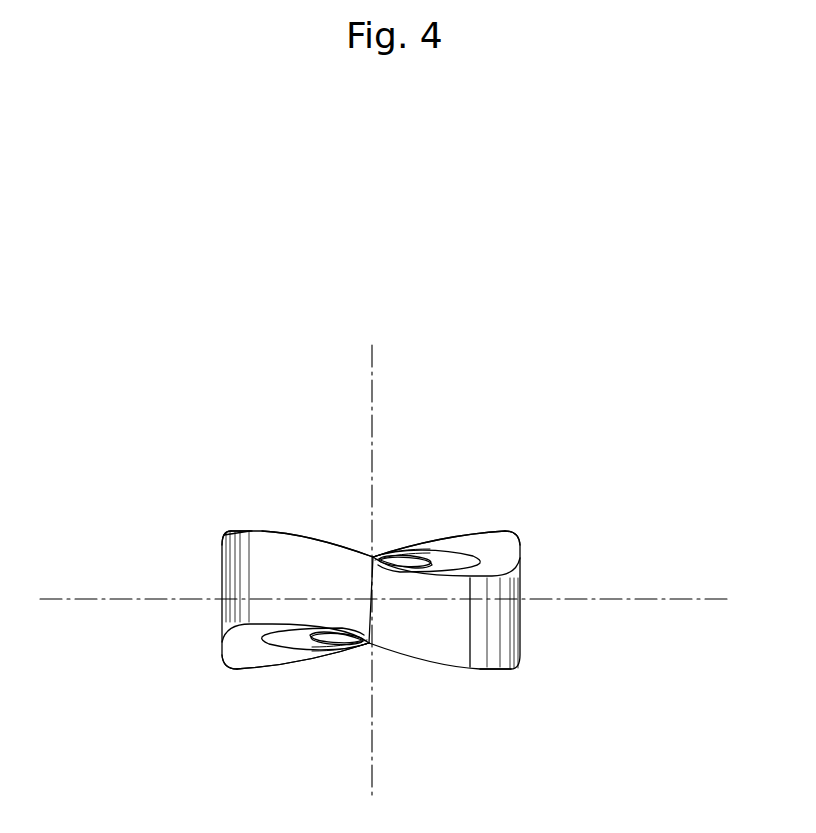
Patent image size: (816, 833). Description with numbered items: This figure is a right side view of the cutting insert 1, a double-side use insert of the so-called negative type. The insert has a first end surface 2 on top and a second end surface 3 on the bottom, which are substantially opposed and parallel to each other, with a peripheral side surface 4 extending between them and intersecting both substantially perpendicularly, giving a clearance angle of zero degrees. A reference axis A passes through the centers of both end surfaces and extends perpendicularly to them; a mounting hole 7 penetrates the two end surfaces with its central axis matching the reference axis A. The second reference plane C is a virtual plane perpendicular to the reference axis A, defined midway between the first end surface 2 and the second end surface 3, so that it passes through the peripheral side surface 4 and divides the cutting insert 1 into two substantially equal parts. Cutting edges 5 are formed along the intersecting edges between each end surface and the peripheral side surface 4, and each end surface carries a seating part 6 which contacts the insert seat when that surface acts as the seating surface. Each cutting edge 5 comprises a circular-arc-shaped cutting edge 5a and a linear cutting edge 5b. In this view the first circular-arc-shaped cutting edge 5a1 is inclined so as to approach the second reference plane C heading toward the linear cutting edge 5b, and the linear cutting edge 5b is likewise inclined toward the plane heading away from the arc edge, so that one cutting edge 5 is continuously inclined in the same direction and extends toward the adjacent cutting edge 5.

The cutting insert 1 is at (507, 440).
The first end surface 2 is at (437, 562).
The second end surface 3 is at (340, 652).
The peripheral side surface 4 is at (263, 577).
The cutting edge 5 is at (242, 528).
The circular-arc-shaped cutting edge 5a is at (231, 530).
The first circular-arc-shaped cutting edge 5a1 is at (223, 537).
The linear cutting edge 5b is at (310, 540).
The seating part 6 is at (448, 562).
The mounting hole 7 is at (367, 647).
The reference axis A is at (370, 391).
The second reference plane C is at (687, 600).